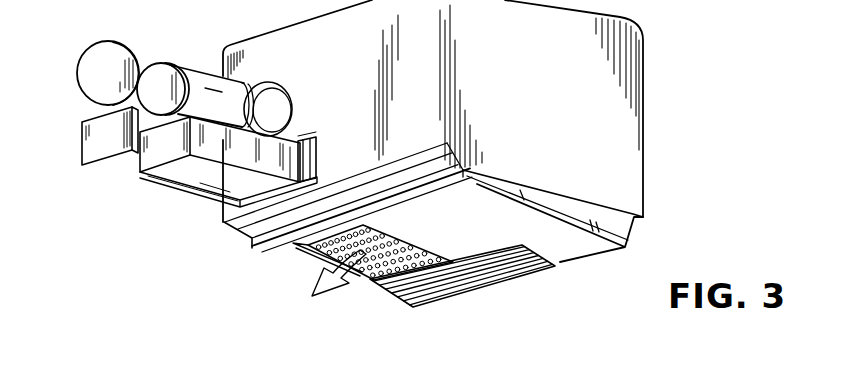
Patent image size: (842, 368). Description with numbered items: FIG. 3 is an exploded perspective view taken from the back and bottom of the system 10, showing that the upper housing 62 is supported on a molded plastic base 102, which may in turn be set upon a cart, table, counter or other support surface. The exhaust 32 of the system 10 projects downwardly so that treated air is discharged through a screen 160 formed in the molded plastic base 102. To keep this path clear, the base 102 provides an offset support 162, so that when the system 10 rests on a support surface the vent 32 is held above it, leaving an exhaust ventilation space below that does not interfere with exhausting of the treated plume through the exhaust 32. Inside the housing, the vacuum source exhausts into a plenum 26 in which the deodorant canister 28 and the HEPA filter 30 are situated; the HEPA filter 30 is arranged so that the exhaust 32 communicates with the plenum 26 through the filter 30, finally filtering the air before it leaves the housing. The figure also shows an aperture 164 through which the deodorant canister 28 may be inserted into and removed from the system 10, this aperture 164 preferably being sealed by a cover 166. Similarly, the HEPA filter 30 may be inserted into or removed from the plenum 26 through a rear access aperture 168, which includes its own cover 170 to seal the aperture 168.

The system 10 is at (168, 306).
The plenum 26 is at (306, 132).
The deodorant canister 28 is at (199, 67).
The HEPA filter 30 is at (184, 190).
The exhaust 32 is at (292, 308).
The upper housing 62 is at (572, 91).
The molded plastic base 102 is at (561, 252).
The screen 160 is at (420, 243).
The offset support 162 is at (318, 261).
The aperture 164 is at (284, 93).
The cover 166 is at (90, 79).
The rear access aperture 168 is at (317, 169).
The cover 170 is at (88, 143).